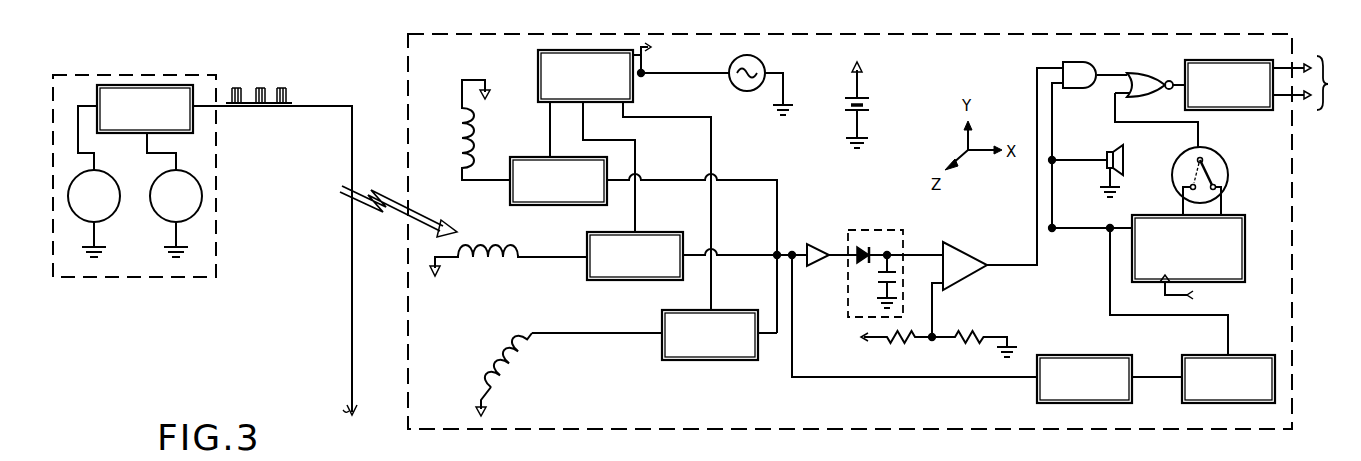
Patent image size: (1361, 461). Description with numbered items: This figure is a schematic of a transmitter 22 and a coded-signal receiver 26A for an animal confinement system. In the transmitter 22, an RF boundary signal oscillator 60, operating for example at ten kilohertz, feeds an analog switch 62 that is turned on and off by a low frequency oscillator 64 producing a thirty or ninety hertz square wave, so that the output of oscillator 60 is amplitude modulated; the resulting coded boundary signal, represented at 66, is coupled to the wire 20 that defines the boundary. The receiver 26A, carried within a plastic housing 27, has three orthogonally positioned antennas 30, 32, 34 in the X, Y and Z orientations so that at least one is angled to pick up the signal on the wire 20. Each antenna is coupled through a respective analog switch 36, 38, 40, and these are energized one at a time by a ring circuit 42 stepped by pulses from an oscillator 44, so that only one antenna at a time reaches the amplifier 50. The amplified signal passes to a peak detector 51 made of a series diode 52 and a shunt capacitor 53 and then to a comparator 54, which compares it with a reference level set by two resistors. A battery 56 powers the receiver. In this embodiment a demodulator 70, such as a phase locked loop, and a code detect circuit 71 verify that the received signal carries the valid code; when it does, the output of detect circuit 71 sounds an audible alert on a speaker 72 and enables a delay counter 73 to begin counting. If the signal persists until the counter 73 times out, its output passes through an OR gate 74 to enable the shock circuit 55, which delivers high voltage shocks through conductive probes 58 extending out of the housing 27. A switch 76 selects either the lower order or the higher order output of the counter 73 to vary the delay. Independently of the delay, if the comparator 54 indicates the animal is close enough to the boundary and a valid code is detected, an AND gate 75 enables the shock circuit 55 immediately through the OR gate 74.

The wire 20 is at (352, 107).
The transmitter 22 is at (164, 286).
The receiver 26A is at (403, 345).
The housing 27 is at (1293, 186).
The antenna 30 is at (484, 262).
The antenna 32 is at (463, 130).
The antenna 34 is at (508, 366).
The analog switch 36 is at (601, 280).
The analog switch 38 is at (541, 205).
The analog switch 40 is at (664, 361).
The ring circuit 42 is at (538, 62).
The oscillator 44 is at (736, 88).
The amplifier 50 is at (815, 243).
The peak detector 51 is at (896, 230).
The series diode 52 is at (858, 266).
The shunt capacitor 53 is at (875, 295).
The comparator 54 is at (980, 240).
The shock circuit 55 is at (1250, 60).
The battery 56 is at (869, 110).
The probes 58 is at (1332, 80).
The RF boundary signal oscillator 60 is at (108, 216).
The analog switch 62 is at (145, 85).
The low frequency oscillator 64 is at (199, 209).
The modulated boundary signal 66 is at (288, 64).
The demodulator 70 is at (1085, 355).
The code detect circuit 71 is at (1210, 355).
The speaker 72 is at (1108, 150).
The delay counter 73 is at (1246, 266).
The OR gate 74 is at (1152, 69).
The AND gate 75 is at (1073, 62).
The switch 76 is at (1229, 176).